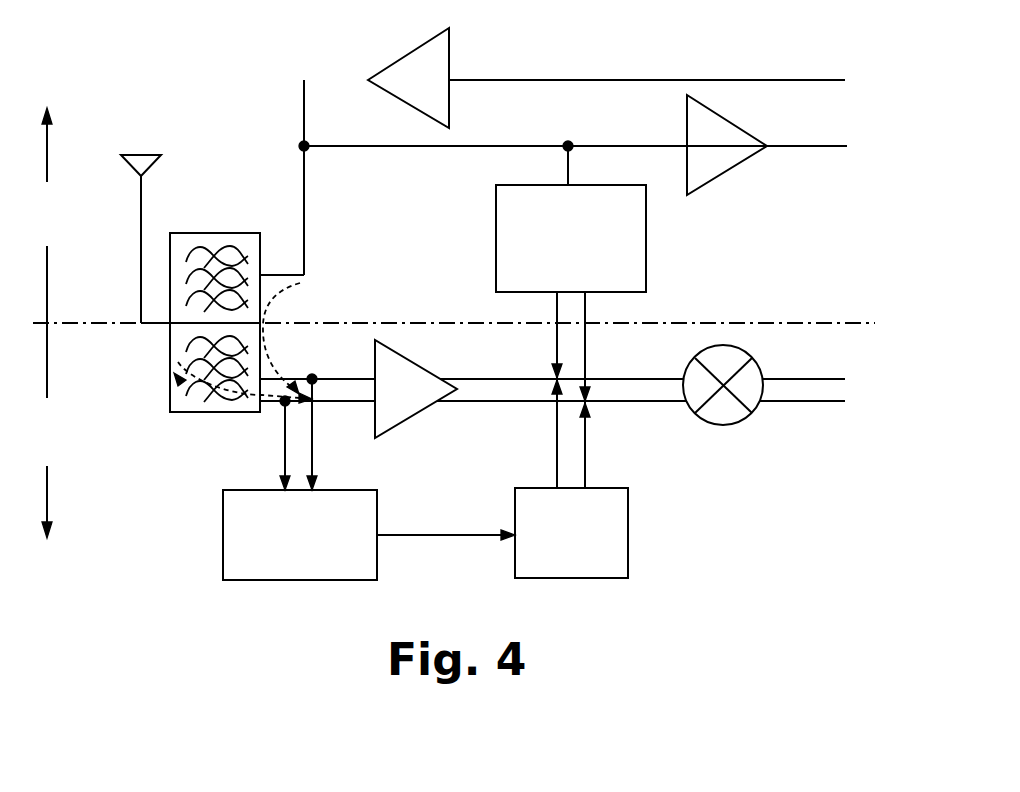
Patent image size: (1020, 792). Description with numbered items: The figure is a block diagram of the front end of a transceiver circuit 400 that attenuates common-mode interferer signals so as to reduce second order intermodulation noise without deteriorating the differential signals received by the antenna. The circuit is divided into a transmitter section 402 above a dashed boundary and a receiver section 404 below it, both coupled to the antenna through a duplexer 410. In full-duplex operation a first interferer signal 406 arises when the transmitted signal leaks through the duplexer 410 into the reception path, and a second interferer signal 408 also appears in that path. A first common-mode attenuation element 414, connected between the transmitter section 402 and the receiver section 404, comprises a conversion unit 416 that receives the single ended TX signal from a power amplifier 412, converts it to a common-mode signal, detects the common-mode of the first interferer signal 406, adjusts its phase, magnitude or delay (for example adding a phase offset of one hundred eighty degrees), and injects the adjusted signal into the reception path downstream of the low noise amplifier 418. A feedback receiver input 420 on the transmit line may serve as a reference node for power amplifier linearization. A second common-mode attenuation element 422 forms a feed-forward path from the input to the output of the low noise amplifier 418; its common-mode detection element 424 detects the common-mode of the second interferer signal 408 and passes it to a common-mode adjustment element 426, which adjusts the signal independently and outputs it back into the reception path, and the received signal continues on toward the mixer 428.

The transceiver circuit 400 is at (130, 42).
The transmitter section 402 is at (47, 215).
The receiver section 404 is at (47, 430).
The first interferer signal 406 is at (303, 306).
The second interferer signal 408 is at (172, 395).
The duplexer 410 is at (218, 233).
The power amplifier 412 is at (408, 52).
The first common-mode attenuation element 414 is at (452, 215).
The conversion unit 416 is at (571, 238).
The low noise amplifier 418 is at (418, 367).
The feedback receiver input 420 is at (738, 118).
The second common-mode attenuation element 422 is at (656, 586).
The common-mode detection element 424 is at (300, 535).
The common-mode adjustment element 426 is at (571, 533).
The mixer 428 is at (752, 360).